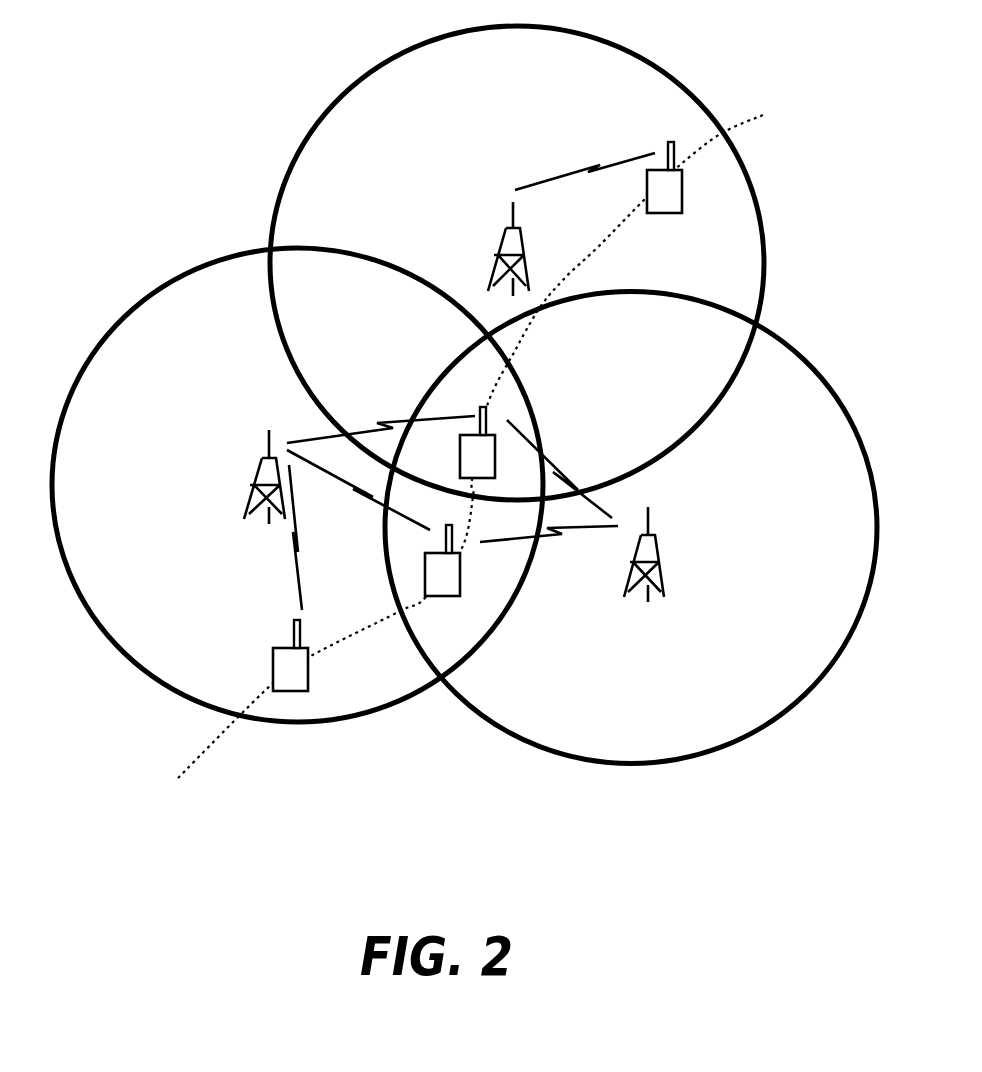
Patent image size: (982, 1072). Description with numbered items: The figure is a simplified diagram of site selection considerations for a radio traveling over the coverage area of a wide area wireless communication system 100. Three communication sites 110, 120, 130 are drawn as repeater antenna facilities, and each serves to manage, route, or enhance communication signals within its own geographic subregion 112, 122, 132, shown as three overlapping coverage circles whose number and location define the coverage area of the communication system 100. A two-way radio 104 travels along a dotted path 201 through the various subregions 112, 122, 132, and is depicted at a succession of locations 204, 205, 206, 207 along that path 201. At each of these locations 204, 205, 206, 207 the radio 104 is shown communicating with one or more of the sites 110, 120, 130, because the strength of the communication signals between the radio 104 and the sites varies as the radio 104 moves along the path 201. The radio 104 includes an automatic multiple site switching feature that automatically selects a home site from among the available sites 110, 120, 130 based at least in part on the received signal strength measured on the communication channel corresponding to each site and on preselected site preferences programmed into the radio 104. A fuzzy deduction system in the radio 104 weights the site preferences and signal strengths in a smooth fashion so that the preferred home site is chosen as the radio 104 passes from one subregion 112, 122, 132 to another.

The wide area wireless communication system 100 is at (523, 865).
The two-way radio 104 is at (505, 419).
The communication site 110 is at (477, 278).
The geographic subregion 112 is at (353, 85).
The communication site 120 is at (238, 498).
The geographic subregion 122 is at (128, 308).
The communication site 130 is at (720, 580).
The geographic subregion 132 is at (753, 737).
The path 201 is at (195, 748).
The location 204 is at (370, 695).
The location 205 is at (513, 586).
The location 206 is at (453, 467).
The location 207 is at (622, 212).